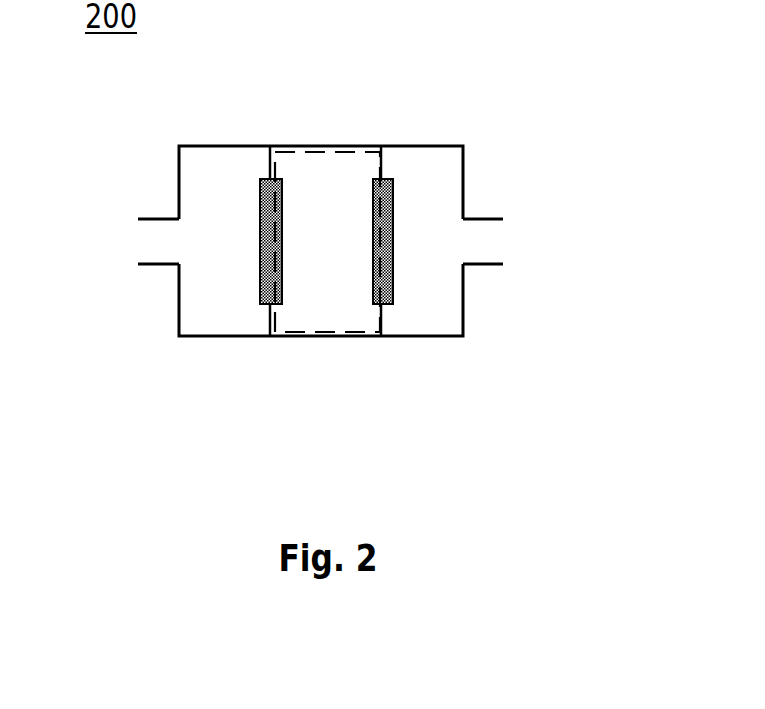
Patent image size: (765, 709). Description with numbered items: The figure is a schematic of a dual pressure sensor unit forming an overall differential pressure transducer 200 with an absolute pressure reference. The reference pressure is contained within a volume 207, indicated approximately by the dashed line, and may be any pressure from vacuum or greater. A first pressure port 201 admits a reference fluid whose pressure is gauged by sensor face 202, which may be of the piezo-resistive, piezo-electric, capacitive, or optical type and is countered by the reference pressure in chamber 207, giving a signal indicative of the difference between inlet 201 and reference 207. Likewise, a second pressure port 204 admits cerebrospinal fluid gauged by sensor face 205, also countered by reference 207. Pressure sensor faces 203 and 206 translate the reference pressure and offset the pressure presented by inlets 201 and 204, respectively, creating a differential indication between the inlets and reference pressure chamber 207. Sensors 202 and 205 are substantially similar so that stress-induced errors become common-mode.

The differential pressure transducer 200 is at (321, 241).
The first pressure port 201 is at (150, 243).
The sensor face 202 is at (258, 210).
The pressure sensor face 203 is at (280, 237).
The second pressure port 204 is at (487, 247).
The sensor face 205 is at (393, 213).
The pressure sensor face 206 is at (373, 272).
The reference pressure chamber 207 is at (327, 241).